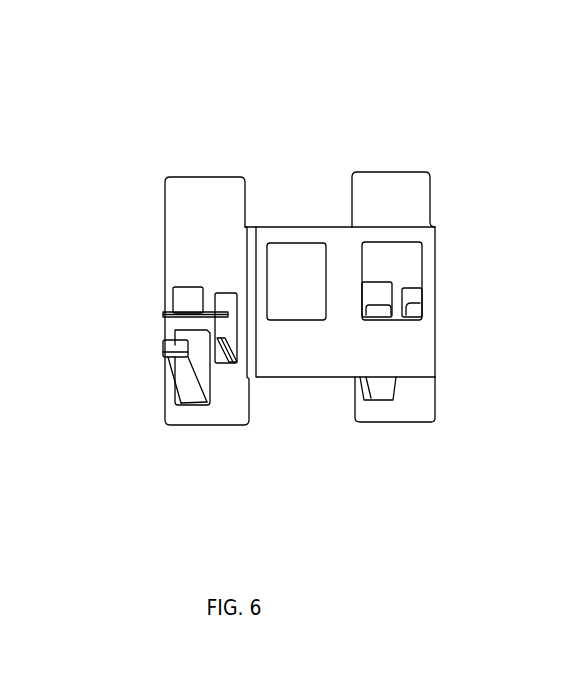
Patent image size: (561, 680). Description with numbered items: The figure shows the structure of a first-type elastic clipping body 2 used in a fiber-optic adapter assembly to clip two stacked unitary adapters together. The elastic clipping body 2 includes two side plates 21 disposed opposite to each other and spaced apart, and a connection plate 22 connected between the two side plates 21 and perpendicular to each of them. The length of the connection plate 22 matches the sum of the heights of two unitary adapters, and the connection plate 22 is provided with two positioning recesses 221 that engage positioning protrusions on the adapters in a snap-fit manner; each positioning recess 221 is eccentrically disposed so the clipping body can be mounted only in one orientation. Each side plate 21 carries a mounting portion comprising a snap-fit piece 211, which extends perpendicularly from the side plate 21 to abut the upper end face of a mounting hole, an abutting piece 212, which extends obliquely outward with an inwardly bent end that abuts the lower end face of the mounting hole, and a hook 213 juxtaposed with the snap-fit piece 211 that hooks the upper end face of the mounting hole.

The elastic clipping body 2 is at (375, 63).
The side plate 21 is at (213, 207).
The connection plate 22 is at (337, 248).
The snap-fit piece 211 is at (164, 313).
The abutting piece 212 is at (178, 377).
The hook 213 is at (227, 355).
The positioning recess 221 is at (288, 288).